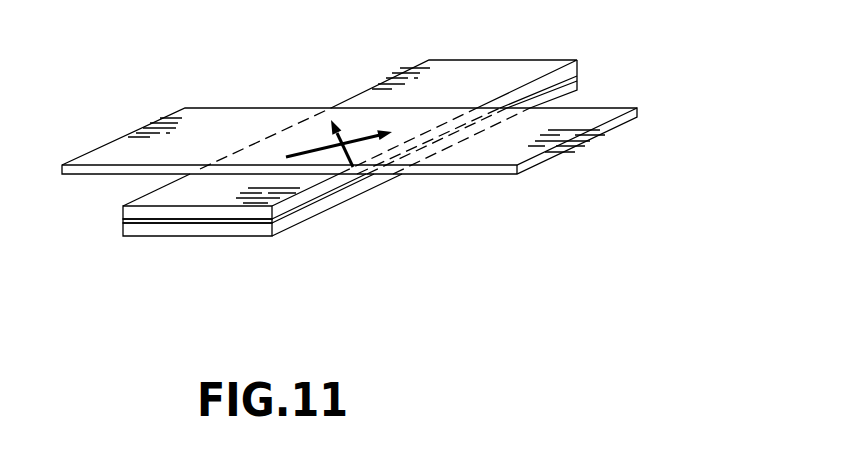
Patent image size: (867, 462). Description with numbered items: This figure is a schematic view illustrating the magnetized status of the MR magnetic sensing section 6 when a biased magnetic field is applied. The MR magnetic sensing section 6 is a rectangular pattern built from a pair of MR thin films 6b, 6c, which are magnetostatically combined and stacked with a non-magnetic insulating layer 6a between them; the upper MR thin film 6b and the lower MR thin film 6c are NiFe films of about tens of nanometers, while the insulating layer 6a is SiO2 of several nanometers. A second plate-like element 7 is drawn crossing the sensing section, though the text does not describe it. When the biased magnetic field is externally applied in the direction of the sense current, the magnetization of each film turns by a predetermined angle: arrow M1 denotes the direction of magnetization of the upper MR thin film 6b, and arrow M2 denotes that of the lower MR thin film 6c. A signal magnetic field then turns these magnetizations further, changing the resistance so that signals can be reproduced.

The MR magnetic sensing section 6 is at (307, 153).
The non-magnetic insulating layer 6a is at (152, 223).
The upper MR thin film 6b is at (152, 206).
The lower MR thin film 6c is at (233, 236).
The crossing plate 7 is at (498, 168).
The arrow M1 is at (376, 139).
The arrow M2 is at (338, 138).